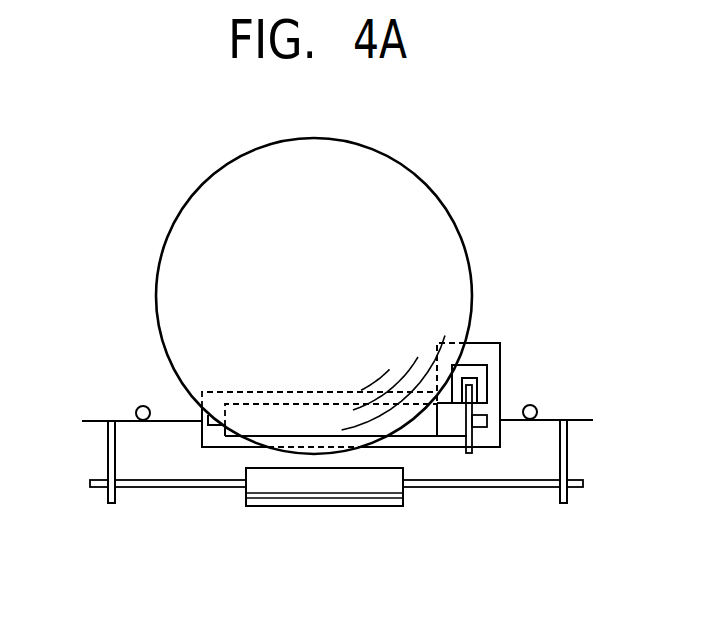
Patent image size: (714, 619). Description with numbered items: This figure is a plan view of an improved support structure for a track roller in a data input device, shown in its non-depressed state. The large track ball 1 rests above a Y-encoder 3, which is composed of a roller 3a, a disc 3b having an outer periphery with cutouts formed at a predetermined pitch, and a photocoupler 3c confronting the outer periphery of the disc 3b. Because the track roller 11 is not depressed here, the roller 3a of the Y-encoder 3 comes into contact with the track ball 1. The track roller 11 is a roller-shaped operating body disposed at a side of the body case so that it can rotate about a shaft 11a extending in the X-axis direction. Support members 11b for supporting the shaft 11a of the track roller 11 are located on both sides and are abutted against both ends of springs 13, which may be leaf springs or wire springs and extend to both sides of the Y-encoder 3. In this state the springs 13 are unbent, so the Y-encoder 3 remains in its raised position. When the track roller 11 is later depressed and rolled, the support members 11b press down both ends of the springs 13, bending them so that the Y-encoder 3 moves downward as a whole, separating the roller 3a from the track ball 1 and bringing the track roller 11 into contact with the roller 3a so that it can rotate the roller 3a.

The track ball 1 is at (440, 235).
The Y-encoder 3 is at (515, 366).
The roller 3a is at (307, 410).
The disc 3b is at (470, 453).
The photocoupler 3c is at (477, 365).
The track roller 11 is at (327, 488).
The shaft 11a is at (188, 488).
The support members 11b is at (108, 461).
The springs 13 is at (125, 420).